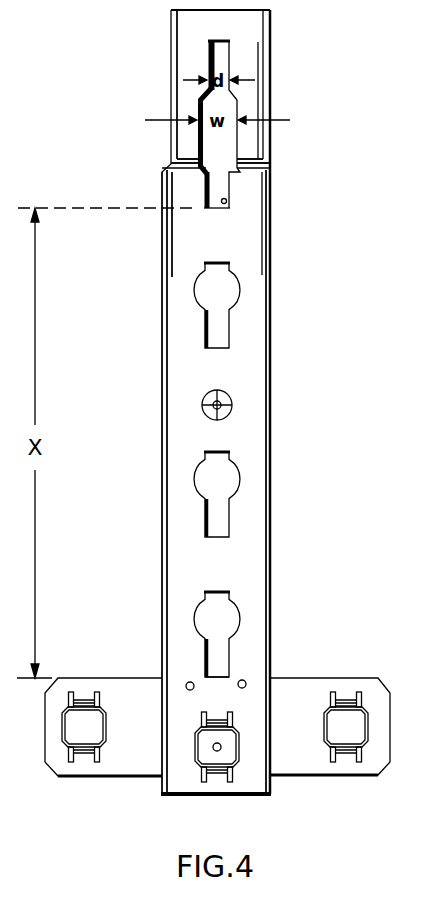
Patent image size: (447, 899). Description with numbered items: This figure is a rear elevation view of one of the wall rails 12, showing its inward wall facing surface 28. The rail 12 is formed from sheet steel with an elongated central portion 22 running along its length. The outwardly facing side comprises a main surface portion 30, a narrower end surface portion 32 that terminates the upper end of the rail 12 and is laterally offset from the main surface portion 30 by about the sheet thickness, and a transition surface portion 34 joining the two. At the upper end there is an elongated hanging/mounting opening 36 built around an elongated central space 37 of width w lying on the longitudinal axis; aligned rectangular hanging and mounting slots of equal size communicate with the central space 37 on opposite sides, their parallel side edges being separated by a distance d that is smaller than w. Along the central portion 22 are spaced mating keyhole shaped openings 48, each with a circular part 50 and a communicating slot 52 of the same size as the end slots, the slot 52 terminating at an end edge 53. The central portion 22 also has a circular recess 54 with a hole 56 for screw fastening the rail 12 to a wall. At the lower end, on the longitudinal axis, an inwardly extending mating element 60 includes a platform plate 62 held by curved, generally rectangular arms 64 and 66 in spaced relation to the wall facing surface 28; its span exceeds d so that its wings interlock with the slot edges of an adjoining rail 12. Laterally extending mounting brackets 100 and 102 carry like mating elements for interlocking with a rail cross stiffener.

The rail 12 is at (298, 425).
The elongated central portion 22 is at (166, 377).
The major surface 28 is at (248, 580).
The main surface portion 30 is at (188, 337).
The end surface portion 32 is at (198, 36).
The transition surface portion 34 is at (257, 153).
The hanging/mounting opening 36 is at (210, 107).
The elongated central space 37 is at (216, 138).
The keyhole shaped opening 48 is at (252, 298).
The circular part 50 is at (211, 290).
The slot 52 is at (218, 330).
The end edge 53 is at (207, 663).
The circular recess 54 is at (218, 399).
The hole 56 is at (218, 405).
The inwardly extending mating element 60 is at (217, 746).
The platform plate 62 is at (225, 757).
The arm 64 is at (218, 712).
The arm 66 is at (219, 782).
The mounting bracket 100 is at (105, 678).
The mounting bracket 102 is at (342, 678).